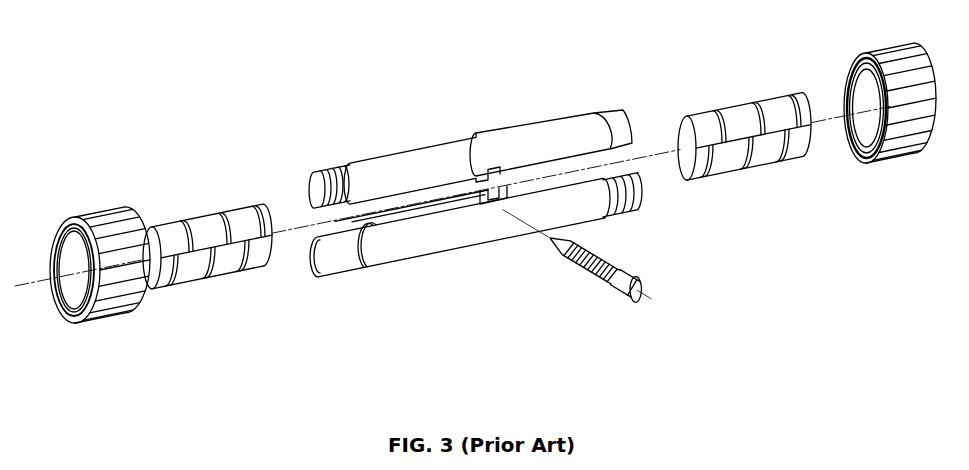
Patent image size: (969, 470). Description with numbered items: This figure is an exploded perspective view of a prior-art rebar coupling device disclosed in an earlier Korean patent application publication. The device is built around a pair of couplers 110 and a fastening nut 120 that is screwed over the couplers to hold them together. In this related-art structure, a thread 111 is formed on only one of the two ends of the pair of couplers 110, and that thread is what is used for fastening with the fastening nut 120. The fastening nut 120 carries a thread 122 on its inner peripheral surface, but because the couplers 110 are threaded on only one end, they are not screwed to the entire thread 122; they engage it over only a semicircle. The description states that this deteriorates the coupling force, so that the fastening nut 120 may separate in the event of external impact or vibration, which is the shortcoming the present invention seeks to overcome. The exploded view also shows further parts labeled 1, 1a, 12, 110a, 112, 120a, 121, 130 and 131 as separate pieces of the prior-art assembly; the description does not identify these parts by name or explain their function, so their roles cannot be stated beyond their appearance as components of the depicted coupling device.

The tubular body 1 is at (200, 220).
The tubular body 1a is at (777, 98).
The slot 12 is at (750, 100).
The coupler 110 is at (373, 162).
The lower shaft half 110a is at (585, 222).
The thread 111 is at (324, 170).
The coupling protrusion 112 is at (482, 168).
The fastening nut 120 is at (110, 218).
The cap 120a is at (892, 53).
The cap rim 121 is at (854, 58).
The thread 122 is at (56, 242).
The screw 130 is at (640, 276).
The screw thread 131 is at (610, 264).